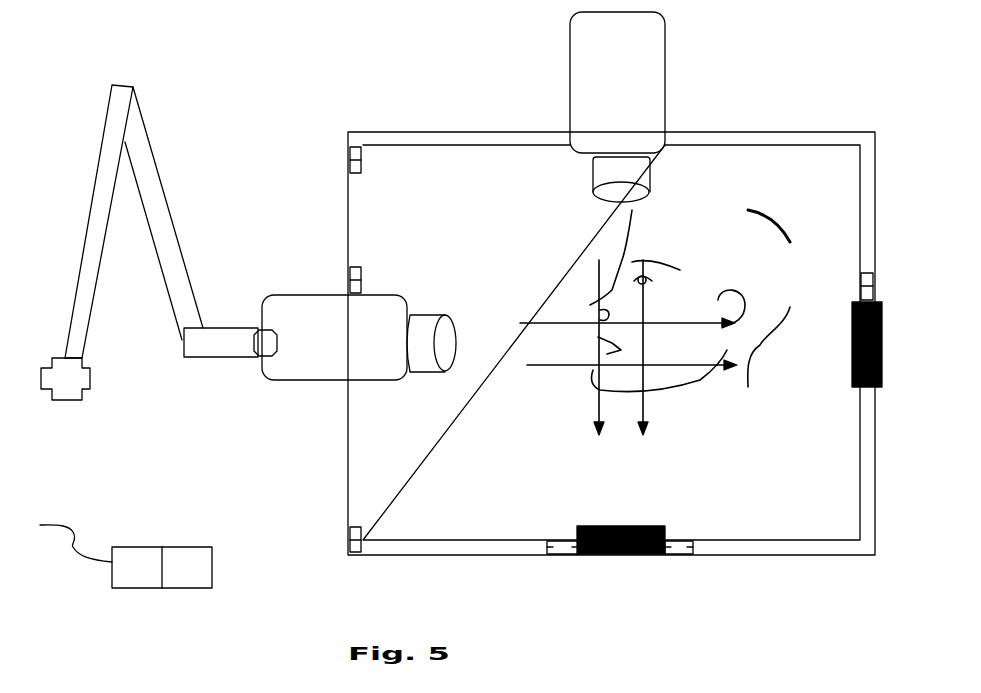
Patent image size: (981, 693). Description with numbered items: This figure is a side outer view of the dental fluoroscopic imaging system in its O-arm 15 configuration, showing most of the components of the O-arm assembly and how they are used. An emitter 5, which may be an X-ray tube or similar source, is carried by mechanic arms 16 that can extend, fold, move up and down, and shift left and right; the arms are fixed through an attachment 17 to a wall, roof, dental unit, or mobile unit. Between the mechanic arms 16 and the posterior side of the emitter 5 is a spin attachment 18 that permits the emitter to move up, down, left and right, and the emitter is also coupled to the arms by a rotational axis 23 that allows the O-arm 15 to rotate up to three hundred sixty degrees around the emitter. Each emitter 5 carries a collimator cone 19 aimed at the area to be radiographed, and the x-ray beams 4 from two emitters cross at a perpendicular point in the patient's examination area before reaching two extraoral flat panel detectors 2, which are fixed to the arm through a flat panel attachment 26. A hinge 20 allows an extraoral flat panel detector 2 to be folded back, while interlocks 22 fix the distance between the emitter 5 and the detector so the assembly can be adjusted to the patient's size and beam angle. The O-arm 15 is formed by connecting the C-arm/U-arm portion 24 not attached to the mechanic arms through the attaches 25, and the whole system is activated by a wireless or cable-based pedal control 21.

The extraoral flat panel detector 2 is at (663, 520).
The x-ray beam 4 is at (593, 397).
The emitter 5 is at (298, 288).
The O-arm 15 is at (808, 560).
The mechanic arms 16 is at (222, 363).
The attachment 17 is at (63, 407).
The spin attachment 18 is at (262, 337).
The collimator cone 19 is at (585, 188).
The hinge 20 is at (368, 160).
The pedal control 21 is at (217, 567).
The interlocks 22 is at (572, 562).
The rotational axis 23 is at (328, 375).
The C-arm/U-arm portion 24 is at (815, 183).
The attaches 25 is at (368, 275).
The flat panel attachment 26 is at (682, 562).